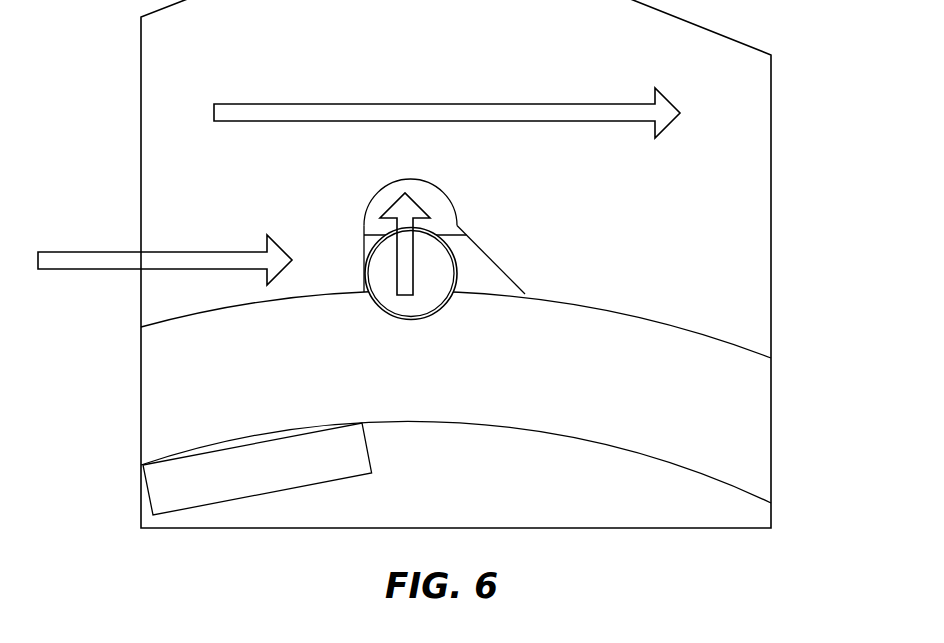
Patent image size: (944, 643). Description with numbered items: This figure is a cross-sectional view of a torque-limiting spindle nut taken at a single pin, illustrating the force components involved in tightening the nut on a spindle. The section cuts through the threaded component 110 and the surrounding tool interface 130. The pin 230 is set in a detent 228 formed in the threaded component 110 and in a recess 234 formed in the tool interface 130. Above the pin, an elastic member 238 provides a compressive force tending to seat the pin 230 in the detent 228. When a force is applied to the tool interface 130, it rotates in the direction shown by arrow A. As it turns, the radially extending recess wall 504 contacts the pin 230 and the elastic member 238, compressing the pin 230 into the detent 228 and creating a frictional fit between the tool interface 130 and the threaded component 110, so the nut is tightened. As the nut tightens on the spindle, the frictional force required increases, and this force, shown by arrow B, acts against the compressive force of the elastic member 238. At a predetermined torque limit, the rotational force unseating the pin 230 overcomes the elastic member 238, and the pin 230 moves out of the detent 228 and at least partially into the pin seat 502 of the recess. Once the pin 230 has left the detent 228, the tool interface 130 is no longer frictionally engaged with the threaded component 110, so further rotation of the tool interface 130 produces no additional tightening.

The tool interface 130 is at (750, 114).
The threaded component 110 is at (758, 423).
The arrow A is at (425, 112).
The arrow B is at (406, 288).
The detent 228 is at (373, 305).
The pin 230 is at (437, 317).
The elastic member 238 is at (447, 212).
The recess 234 is at (490, 262).
The pin seat 502 is at (388, 184).
The radially extending recess wall 504 is at (364, 248).